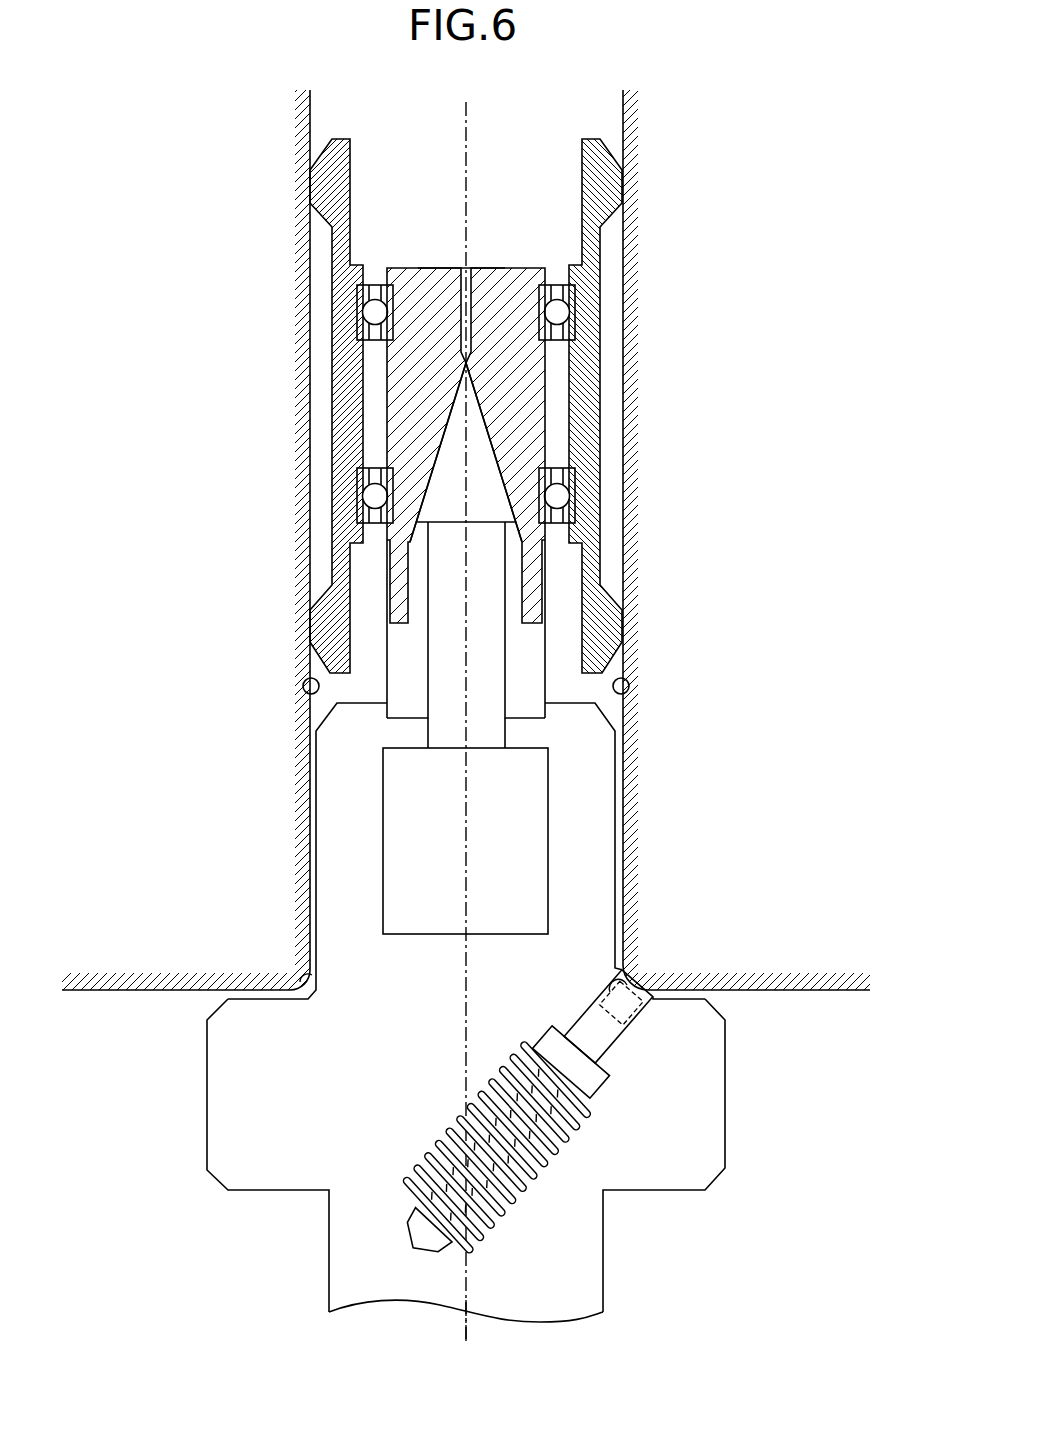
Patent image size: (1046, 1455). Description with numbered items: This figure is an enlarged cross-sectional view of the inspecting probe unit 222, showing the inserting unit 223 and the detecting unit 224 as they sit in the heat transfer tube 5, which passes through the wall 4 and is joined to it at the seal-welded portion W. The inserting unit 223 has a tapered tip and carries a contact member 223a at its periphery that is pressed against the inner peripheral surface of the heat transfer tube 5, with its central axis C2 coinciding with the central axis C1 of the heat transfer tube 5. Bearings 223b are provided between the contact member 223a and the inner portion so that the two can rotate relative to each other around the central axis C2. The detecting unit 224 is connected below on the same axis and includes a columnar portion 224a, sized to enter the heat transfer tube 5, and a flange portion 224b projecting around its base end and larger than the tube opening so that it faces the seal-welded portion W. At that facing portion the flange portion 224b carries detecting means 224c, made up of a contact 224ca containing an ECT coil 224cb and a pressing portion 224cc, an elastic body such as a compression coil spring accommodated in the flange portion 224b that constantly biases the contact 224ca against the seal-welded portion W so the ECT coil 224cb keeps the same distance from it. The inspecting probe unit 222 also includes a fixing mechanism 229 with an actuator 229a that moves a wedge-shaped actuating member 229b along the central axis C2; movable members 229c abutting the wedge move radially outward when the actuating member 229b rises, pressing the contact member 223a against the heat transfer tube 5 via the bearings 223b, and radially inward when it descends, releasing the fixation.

The wall 4 is at (128, 991).
The heat transfer tube 5 is at (314, 692).
The inspecting probe unit 222 is at (492, 1012).
The inserting unit 223 is at (465, 536).
The contact member 223a is at (342, 306).
The bearings 223b is at (362, 330).
The detecting unit 224 is at (517, 1012).
The columnar portion 224a is at (590, 855).
The flange portion 224b is at (706, 1117).
The detecting means 224c is at (617, 1123).
The contact 224ca is at (645, 1010).
The ECT coil 224cb is at (640, 1025).
The pressing portion 224cc is at (549, 1166).
The fixing mechanism 229 is at (554, 585).
The actuator 229a is at (533, 805).
The actuating member 229b is at (476, 435).
The movable members 229c is at (418, 268).
The seal-welded portion W is at (300, 982).
The central axis of the heat transfer tube C1 is at (467, 108).
The central axis of the inserting unit C2 is at (466, 1336).